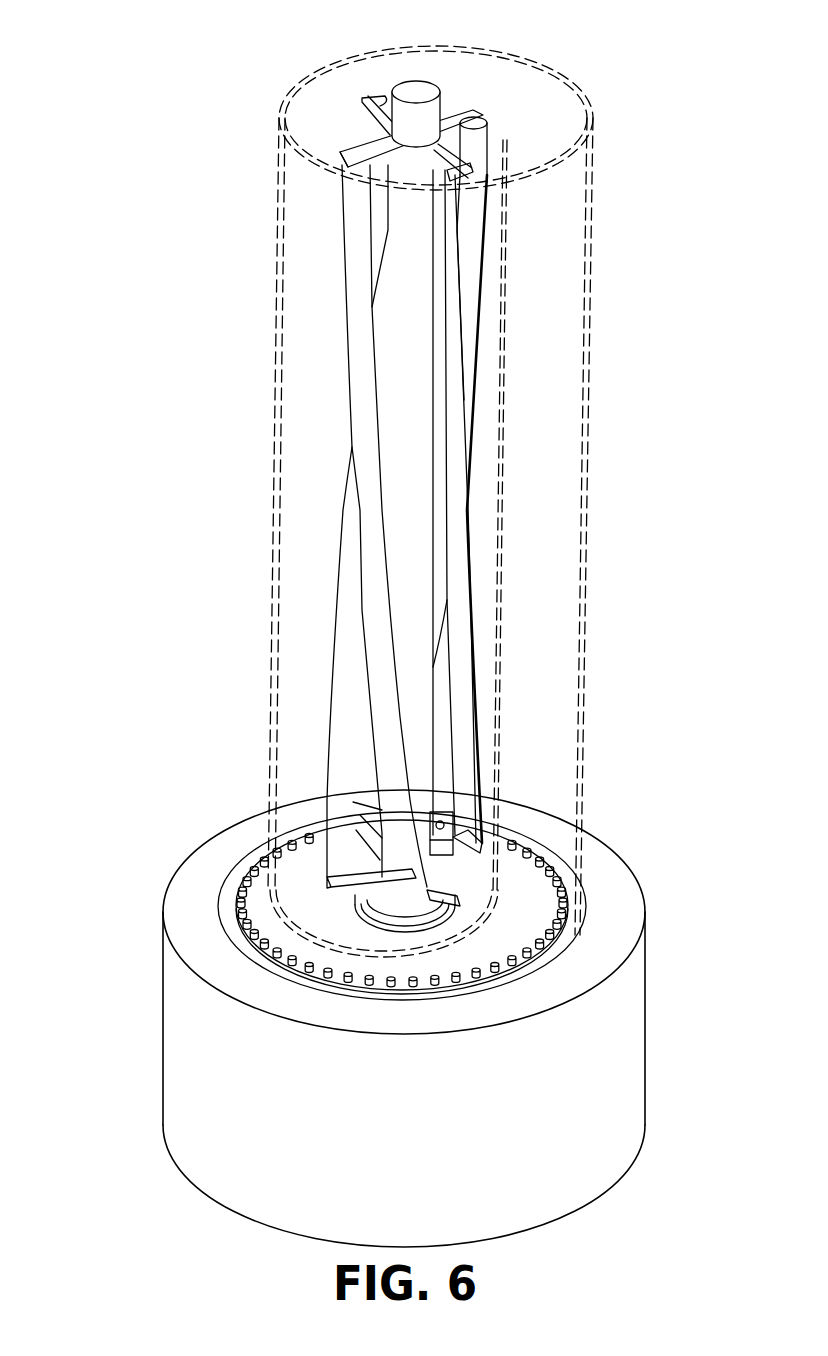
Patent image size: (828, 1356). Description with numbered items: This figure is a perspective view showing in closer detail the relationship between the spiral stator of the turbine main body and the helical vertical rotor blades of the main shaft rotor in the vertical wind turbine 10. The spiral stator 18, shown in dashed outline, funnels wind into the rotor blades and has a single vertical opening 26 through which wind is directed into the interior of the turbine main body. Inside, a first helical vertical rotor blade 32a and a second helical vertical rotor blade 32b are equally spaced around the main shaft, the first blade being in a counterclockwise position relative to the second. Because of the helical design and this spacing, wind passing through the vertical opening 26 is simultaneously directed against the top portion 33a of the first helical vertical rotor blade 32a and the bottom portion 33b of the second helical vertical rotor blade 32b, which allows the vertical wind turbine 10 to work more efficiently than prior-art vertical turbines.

The vertical wind turbine 10 is at (128, 100).
The spiral stator 18 is at (268, 553).
The vertical opening 26 is at (551, 722).
The first helical vertical rotor blade 32a is at (468, 272).
The second helical vertical rotor blade 32b is at (470, 530).
The top portion 33a is at (483, 128).
The bottom portion 33b is at (543, 863).